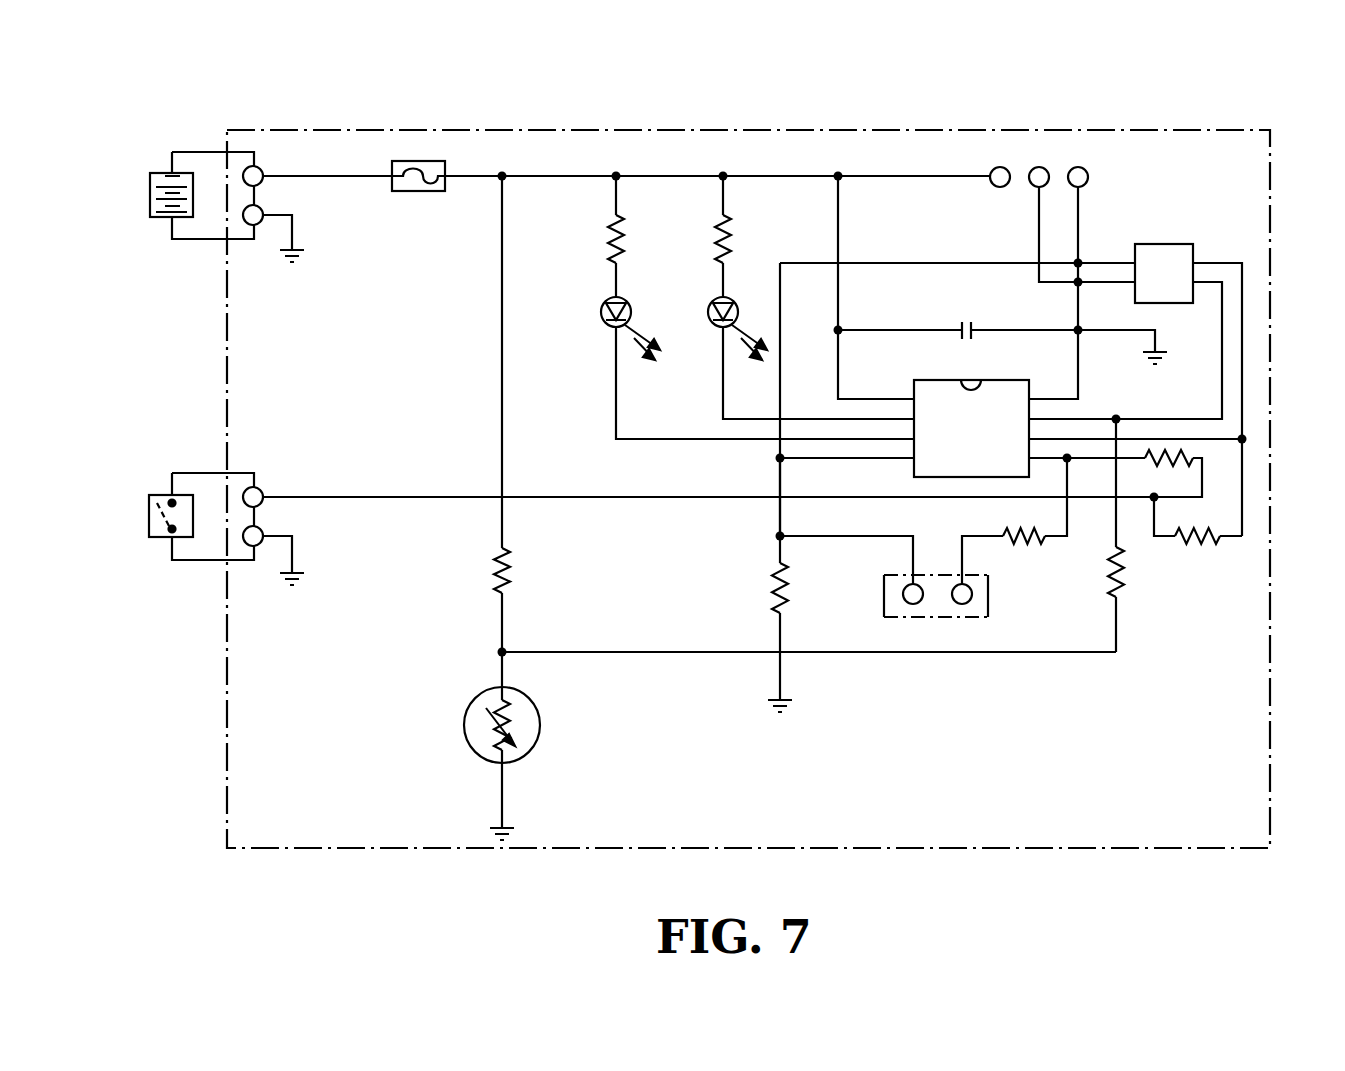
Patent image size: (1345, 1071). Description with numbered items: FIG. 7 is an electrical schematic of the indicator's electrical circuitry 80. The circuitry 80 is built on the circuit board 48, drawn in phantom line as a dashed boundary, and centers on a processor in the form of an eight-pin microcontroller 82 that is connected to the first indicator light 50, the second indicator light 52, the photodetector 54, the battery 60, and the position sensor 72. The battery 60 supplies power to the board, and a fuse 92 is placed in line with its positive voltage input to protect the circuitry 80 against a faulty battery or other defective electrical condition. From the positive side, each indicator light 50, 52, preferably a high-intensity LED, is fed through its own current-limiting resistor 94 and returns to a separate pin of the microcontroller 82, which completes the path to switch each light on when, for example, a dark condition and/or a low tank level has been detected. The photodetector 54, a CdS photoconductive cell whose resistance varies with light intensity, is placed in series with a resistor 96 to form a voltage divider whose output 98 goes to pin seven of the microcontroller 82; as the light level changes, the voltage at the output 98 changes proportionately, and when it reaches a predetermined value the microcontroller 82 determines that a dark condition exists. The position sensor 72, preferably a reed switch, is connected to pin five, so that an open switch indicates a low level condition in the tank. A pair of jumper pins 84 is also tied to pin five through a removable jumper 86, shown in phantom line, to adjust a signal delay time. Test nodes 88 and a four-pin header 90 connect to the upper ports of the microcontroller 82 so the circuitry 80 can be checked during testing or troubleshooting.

The circuit board 48 is at (1165, 160).
The first indicator light 50 is at (600, 322).
The second indicator light 52 is at (708, 322).
The photodetector 54 is at (540, 722).
The battery 60 is at (150, 188).
The position sensor 72 is at (145, 502).
The electrical circuitry 80 is at (1272, 233).
The microcontroller 82 is at (953, 380).
The jumper pins 84 is at (918, 600).
The removable jumper 86 is at (988, 595).
The test nodes 88 is at (1078, 167).
The four-pin header 90 is at (1145, 244).
The fuse 92 is at (402, 191).
The current-limiting resistor 94 is at (712, 238).
The resistor 96 is at (510, 570).
The output 98 is at (563, 652).